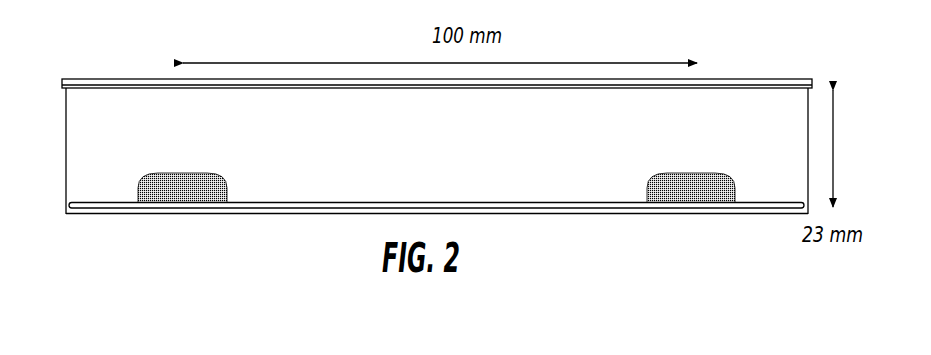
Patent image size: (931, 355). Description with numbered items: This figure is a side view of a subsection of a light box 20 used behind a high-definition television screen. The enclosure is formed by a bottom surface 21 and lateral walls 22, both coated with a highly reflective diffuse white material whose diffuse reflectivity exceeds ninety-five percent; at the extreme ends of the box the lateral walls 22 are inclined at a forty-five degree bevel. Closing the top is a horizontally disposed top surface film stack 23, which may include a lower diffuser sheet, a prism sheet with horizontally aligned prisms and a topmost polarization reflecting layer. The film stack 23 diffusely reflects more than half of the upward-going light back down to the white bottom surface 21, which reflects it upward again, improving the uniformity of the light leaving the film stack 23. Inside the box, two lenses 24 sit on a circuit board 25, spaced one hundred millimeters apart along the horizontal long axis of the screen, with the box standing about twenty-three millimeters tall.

The light box 20 is at (135, 243).
The bottom surface 21 is at (645, 217).
The lateral walls 22 is at (70, 118).
The top surface film stack 23 is at (722, 82).
The lenses 24 is at (225, 178).
The circuit board 25 is at (413, 200).